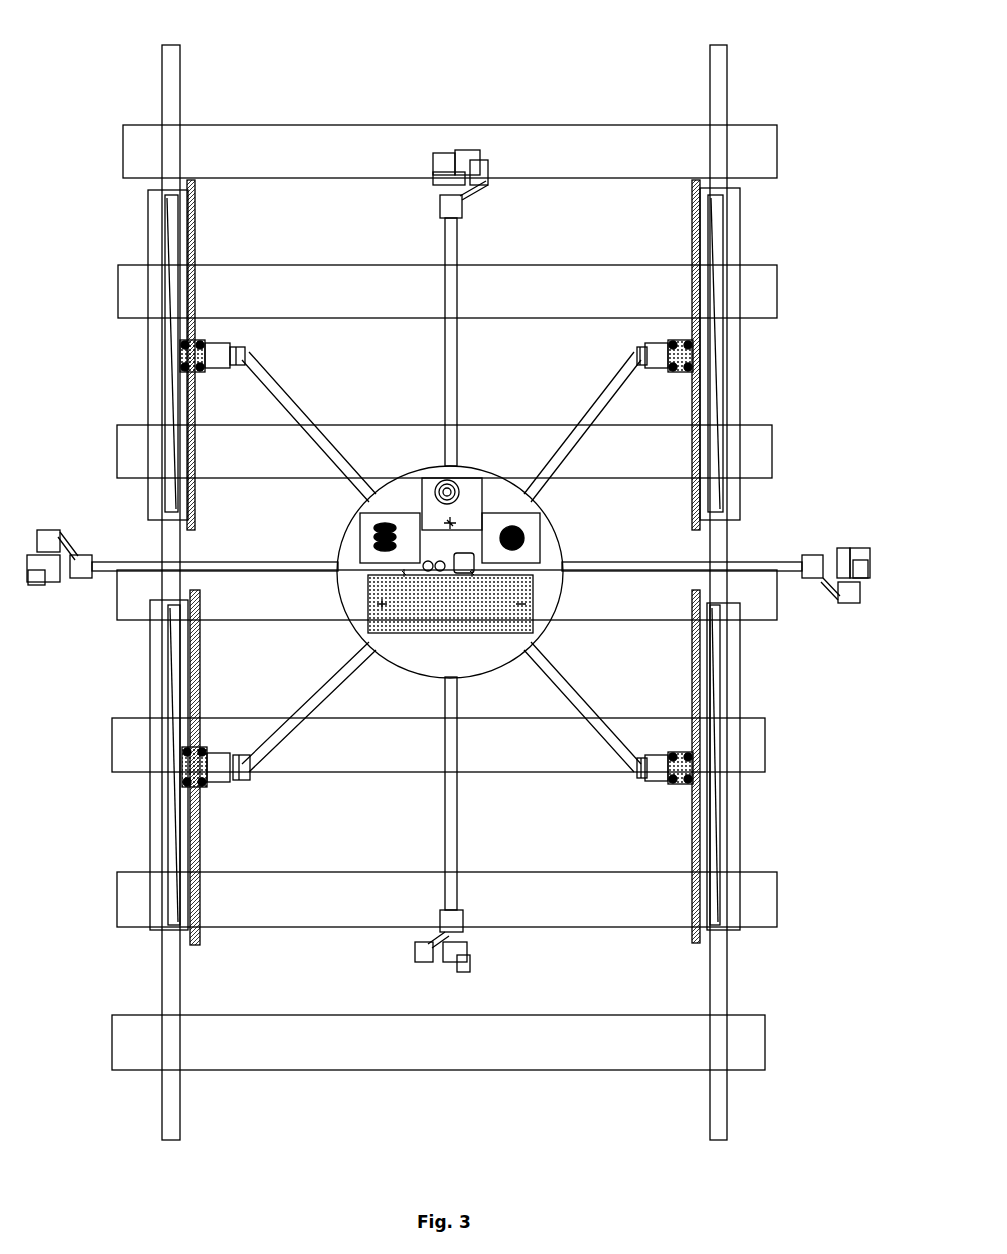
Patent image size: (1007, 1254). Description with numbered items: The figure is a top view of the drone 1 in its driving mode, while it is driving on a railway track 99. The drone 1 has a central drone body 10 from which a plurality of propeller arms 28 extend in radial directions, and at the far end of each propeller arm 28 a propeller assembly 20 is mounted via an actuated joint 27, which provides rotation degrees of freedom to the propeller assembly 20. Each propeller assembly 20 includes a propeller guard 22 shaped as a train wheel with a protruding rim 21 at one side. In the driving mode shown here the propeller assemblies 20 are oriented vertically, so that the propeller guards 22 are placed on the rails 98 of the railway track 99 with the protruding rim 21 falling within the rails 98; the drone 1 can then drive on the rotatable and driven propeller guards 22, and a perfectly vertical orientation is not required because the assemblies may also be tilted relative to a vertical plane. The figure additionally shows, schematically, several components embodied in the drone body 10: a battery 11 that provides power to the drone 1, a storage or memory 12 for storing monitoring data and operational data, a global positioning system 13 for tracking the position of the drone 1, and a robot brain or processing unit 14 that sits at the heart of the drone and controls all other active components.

The drone 1 is at (126, 76).
The drone body 10 is at (447, 548).
The battery 11 is at (398, 614).
The storage or memory 12 is at (376, 514).
The global positioning system (GPS) 13 is at (440, 488).
The robot brain / processing unit 14 is at (530, 524).
The propeller assembly 20 is at (154, 403).
The protruding rim 21 is at (194, 950).
The propeller guard 22 is at (155, 232).
The actuated joint 27 is at (240, 352).
The propeller arm 28 is at (290, 392).
The rail 98 is at (175, 1113).
The railway track 99 is at (718, 95).